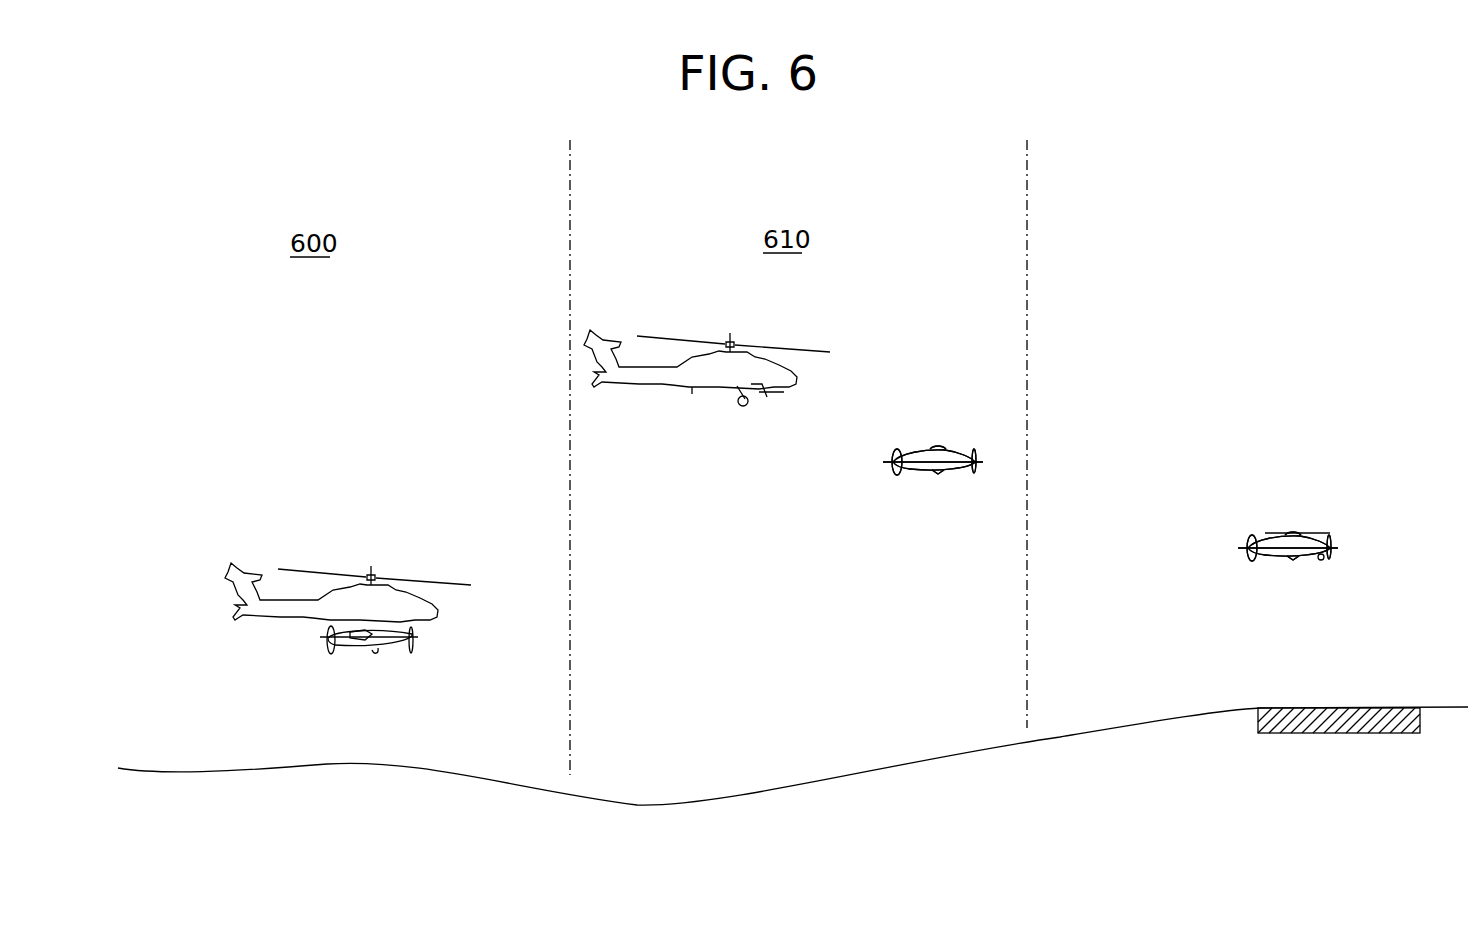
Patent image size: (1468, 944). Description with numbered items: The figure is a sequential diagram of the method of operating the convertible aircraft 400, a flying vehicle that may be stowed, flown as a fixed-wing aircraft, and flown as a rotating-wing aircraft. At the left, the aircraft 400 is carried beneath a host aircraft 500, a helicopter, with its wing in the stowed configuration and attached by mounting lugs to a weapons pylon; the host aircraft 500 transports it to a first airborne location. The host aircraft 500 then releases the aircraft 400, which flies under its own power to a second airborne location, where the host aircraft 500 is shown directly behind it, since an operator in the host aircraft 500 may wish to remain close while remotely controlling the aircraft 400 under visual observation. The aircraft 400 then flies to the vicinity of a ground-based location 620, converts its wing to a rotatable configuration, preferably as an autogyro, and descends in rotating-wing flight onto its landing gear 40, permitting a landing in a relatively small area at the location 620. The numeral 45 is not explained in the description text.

The host aircraft 500 is at (287, 620).
The aircraft 400 is at (378, 652).
The unmanned aerial vehicle in flight 45 is at (930, 475).
The landing gear 40 is at (1324, 560).
The ground-based location 620 is at (1310, 734).